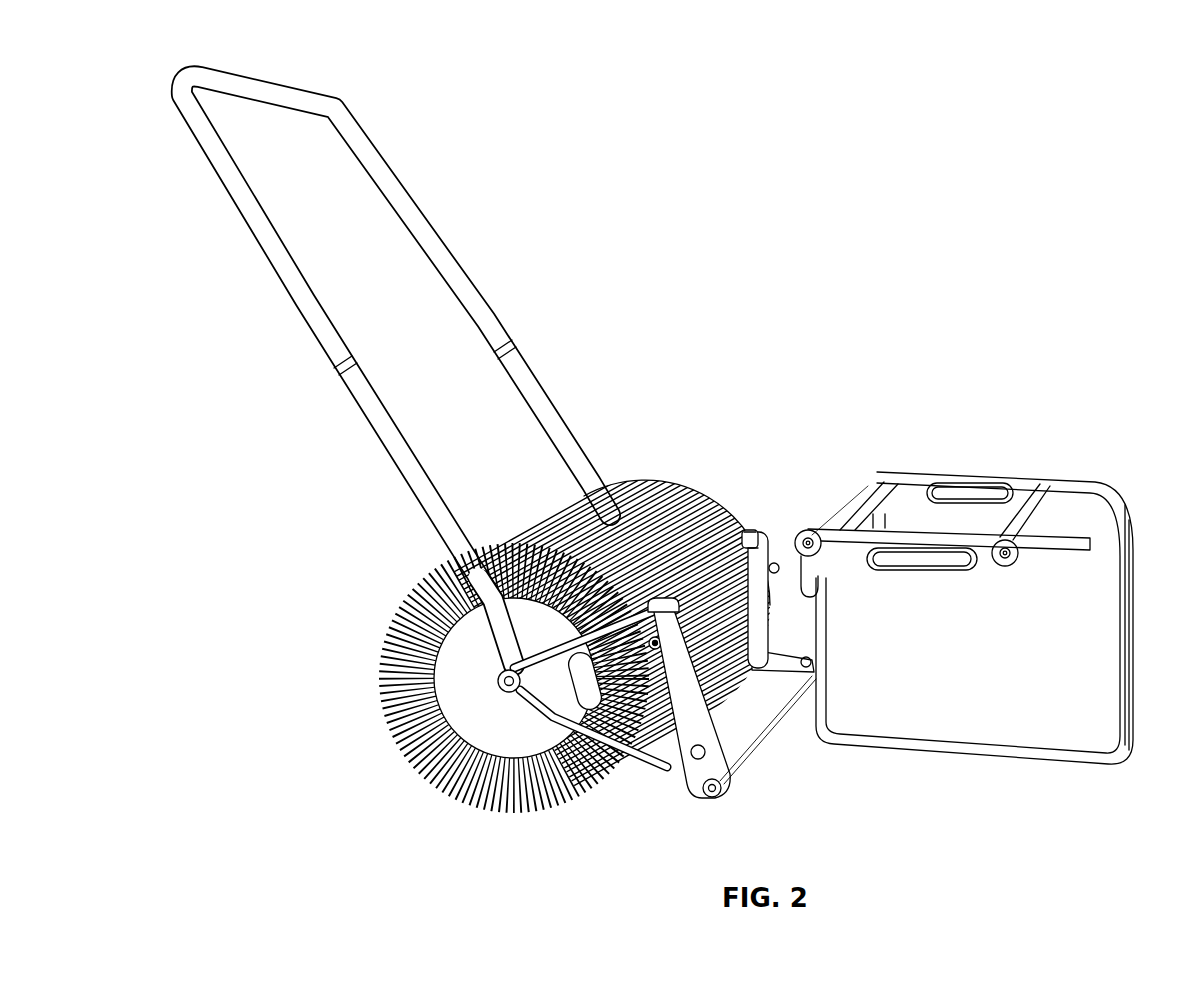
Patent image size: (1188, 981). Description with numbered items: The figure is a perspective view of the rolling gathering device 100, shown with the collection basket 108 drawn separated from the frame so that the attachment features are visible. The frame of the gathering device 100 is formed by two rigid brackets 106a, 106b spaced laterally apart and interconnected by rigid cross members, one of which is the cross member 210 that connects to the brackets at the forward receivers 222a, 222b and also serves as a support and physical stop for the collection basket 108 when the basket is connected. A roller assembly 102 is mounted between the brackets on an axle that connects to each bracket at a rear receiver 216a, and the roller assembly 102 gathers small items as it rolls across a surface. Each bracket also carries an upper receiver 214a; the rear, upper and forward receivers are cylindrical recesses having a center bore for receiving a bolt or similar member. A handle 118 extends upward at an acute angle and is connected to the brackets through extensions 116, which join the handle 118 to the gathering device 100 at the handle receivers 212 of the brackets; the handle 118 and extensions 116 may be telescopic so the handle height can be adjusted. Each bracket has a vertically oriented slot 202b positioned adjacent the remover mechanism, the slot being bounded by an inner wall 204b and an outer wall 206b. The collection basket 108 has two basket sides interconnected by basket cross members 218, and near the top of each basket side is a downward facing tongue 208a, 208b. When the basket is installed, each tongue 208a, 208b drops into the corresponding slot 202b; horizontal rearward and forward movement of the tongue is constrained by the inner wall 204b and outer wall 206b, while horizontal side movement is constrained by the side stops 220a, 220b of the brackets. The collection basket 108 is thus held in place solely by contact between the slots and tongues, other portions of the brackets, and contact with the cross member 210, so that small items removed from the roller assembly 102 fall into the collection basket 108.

The gathering device 100 is at (727, 136).
The roller assembly 102 is at (434, 790).
The bracket 106a is at (690, 784).
The bracket 106b is at (753, 670).
The collection basket 108 is at (1068, 435).
The extension 116 is at (455, 645).
The handle 118 is at (245, 88).
The slot 202b is at (750, 537).
The inner wall 204b is at (744, 533).
The outer wall 206b is at (753, 547).
The tongue 208a is at (798, 578).
The tongue 208b is at (878, 512).
The cross member 210 is at (753, 744).
The handle receiver 212 is at (518, 663).
The upper receiver 214a is at (648, 646).
The rear receiver 216a is at (500, 685).
The basket cross member 218 is at (865, 490).
The side stop 220a is at (697, 736).
The side stop 220b is at (777, 562).
The forward receiver 222a is at (718, 789).
The forward receiver 222b is at (806, 668).